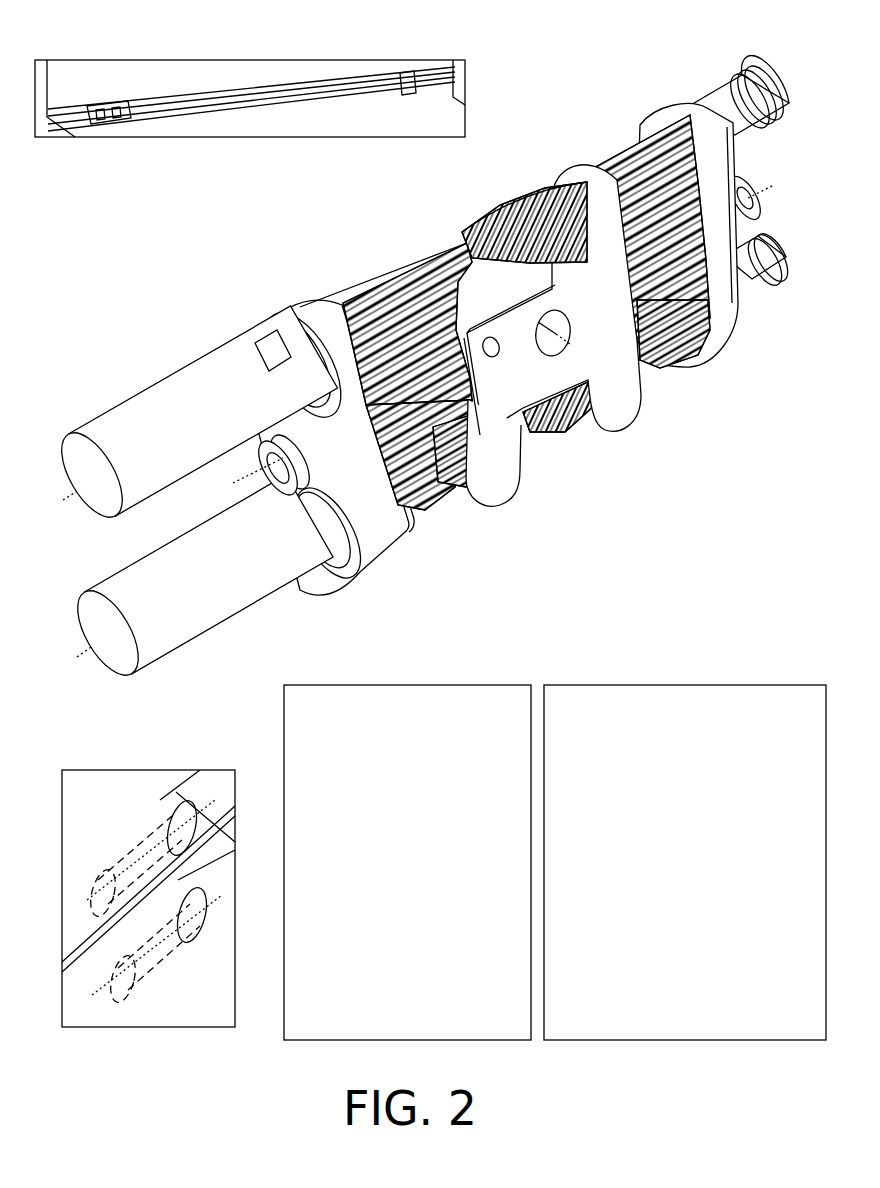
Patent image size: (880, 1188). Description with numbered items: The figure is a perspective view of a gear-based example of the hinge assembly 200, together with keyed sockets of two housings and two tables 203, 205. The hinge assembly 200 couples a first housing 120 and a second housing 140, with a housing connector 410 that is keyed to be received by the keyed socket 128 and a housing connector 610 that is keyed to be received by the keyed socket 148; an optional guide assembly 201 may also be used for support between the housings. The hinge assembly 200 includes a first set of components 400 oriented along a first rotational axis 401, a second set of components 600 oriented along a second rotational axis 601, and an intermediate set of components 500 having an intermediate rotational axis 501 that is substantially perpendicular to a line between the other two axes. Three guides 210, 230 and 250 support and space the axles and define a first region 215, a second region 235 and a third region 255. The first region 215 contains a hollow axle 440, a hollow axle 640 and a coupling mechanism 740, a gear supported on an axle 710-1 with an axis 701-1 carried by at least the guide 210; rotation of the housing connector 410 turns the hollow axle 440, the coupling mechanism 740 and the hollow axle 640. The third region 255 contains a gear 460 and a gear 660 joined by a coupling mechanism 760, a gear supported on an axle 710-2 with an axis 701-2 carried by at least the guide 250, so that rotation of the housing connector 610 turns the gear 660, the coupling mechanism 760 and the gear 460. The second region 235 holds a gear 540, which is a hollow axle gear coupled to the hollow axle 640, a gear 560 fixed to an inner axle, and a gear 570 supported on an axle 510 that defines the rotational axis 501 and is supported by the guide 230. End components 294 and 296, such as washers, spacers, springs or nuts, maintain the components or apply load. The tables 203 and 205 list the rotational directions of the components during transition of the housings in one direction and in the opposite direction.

The first housing 120 is at (286, 562).
The keyed socket 128 is at (178, 955).
The second housing 140 is at (121, 432).
The keyed socket 148 is at (162, 805).
The hinge assembly 200 is at (105, 100).
The guide assembly 201 is at (410, 96).
The table 203 is at (407, 862).
The table 205 is at (685, 862).
The guide 210 is at (377, 547).
The first region 215 is at (460, 558).
The guide 230 is at (502, 473).
The second region 235 is at (587, 480).
The guide 250 is at (717, 335).
The third region 255 is at (687, 417).
The end component 294 is at (718, 70).
The end component 296 is at (759, 315).
The first set of components 400 is at (208, 300).
The first rotational axis 401 is at (72, 498).
The housing connector 410 is at (167, 385).
The hollow axle 440 is at (387, 277).
The gear 460 is at (630, 152).
The intermediate set of components 500 is at (627, 540).
The intermediate rotational axis 501 is at (504, 337).
The axle 510 is at (567, 347).
The gear 540 is at (560, 433).
The gear 560 is at (500, 200).
The gear 570 is at (550, 283).
The second set of components 600 is at (277, 640).
The second rotational axis 601 is at (80, 660).
The housing connector 610 is at (273, 587).
The hollow axle 640 is at (417, 490).
The gear 660 is at (645, 362).
The axis 701-1 is at (240, 480).
The axis 701-2 is at (762, 195).
The axle 710-1 is at (270, 490).
The axle 710-2 is at (737, 192).
The coupling mechanism 740 is at (480, 390).
The coupling mechanism 760 is at (633, 305).